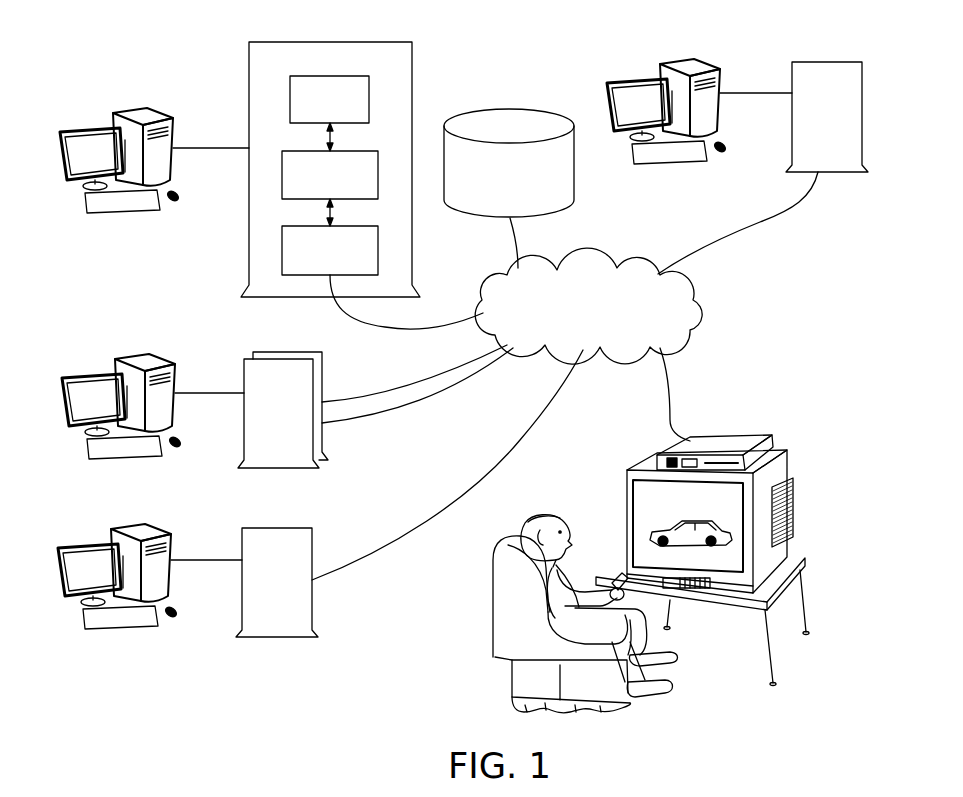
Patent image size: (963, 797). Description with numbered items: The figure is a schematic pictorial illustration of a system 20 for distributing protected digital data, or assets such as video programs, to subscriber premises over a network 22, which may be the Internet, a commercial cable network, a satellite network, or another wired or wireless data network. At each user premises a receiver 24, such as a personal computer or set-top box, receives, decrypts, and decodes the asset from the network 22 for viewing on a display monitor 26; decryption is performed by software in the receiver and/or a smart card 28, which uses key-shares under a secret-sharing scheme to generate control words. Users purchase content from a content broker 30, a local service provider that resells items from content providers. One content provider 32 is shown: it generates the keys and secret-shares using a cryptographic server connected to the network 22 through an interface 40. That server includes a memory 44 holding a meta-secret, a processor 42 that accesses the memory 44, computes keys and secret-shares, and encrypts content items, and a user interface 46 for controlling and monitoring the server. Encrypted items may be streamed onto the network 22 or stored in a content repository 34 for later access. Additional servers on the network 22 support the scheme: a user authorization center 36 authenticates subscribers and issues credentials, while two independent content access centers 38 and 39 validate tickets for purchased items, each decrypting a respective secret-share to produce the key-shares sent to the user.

The system 20 is at (107, 43).
The network 22 is at (697, 312).
The receiver 24 is at (687, 531).
The display monitor 26 is at (626, 485).
The smart card 28 is at (712, 455).
The content broker 30 is at (822, 62).
The content provider 32 is at (335, 168).
The content repository 34 is at (574, 182).
The user authorization center 36 is at (313, 605).
The content access center 38 is at (222, 410).
The content access center 39 is at (322, 370).
The interface 40 is at (282, 250).
The processor 42 is at (282, 175).
The memory 44 is at (290, 100).
The user interface 46 is at (138, 110).